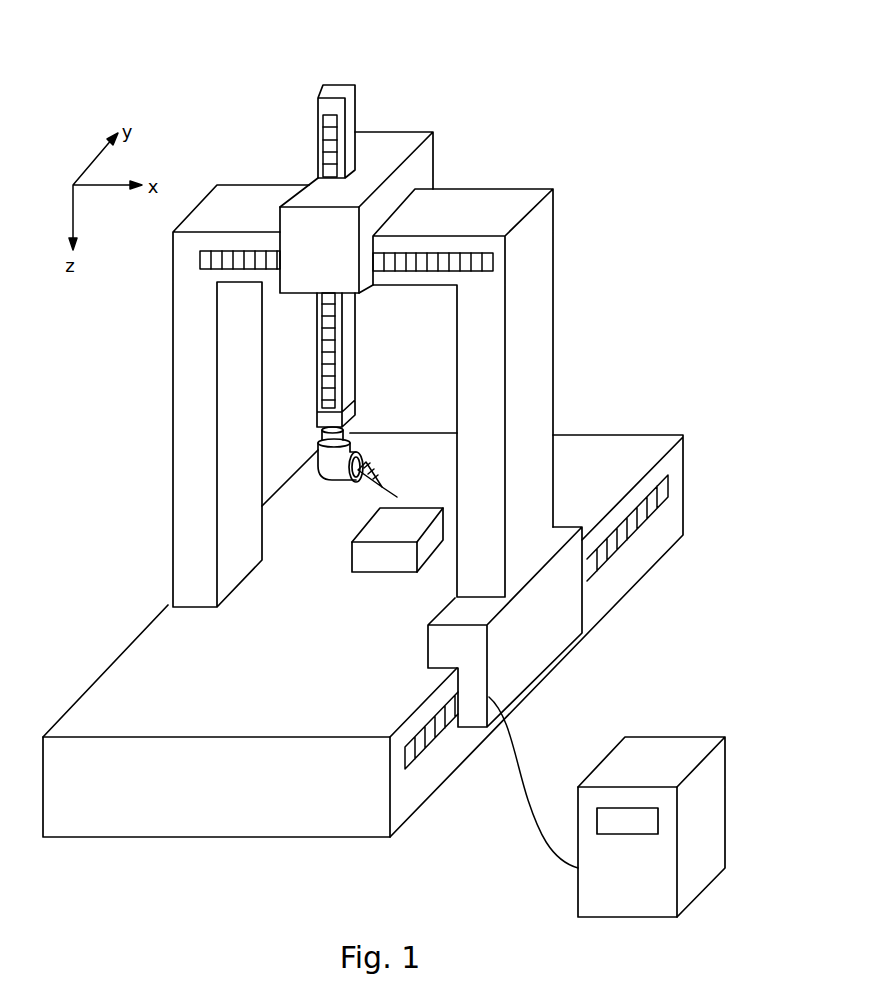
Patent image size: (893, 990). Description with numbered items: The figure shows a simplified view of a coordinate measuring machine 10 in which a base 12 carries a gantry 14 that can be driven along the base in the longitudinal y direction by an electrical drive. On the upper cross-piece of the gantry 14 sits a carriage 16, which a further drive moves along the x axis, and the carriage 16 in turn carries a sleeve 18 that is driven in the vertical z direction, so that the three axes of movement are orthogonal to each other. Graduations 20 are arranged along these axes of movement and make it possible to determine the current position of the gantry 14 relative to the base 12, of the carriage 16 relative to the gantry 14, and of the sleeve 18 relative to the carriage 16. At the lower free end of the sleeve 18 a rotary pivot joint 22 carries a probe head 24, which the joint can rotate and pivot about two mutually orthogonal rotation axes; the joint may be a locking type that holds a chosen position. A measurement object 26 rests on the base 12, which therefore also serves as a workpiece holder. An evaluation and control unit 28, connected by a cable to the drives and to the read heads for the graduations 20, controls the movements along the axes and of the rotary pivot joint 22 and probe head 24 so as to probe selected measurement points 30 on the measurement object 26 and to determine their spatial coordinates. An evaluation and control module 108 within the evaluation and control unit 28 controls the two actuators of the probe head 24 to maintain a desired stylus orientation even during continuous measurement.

The coordinate measuring machine 10 is at (549, 127).
The base 12 is at (128, 683).
The gantry 14 is at (190, 435).
The carriage 16 is at (393, 143).
The sleeve 18 is at (337, 90).
The graduations 20 is at (323, 135).
The rotary pivot joint 22 is at (301, 458).
The probe head 24 is at (365, 470).
The measurement object 26 is at (377, 560).
The evaluation and control unit 28 is at (668, 755).
The measurement point 30 is at (408, 508).
The evaluation and control module 108 is at (650, 822).